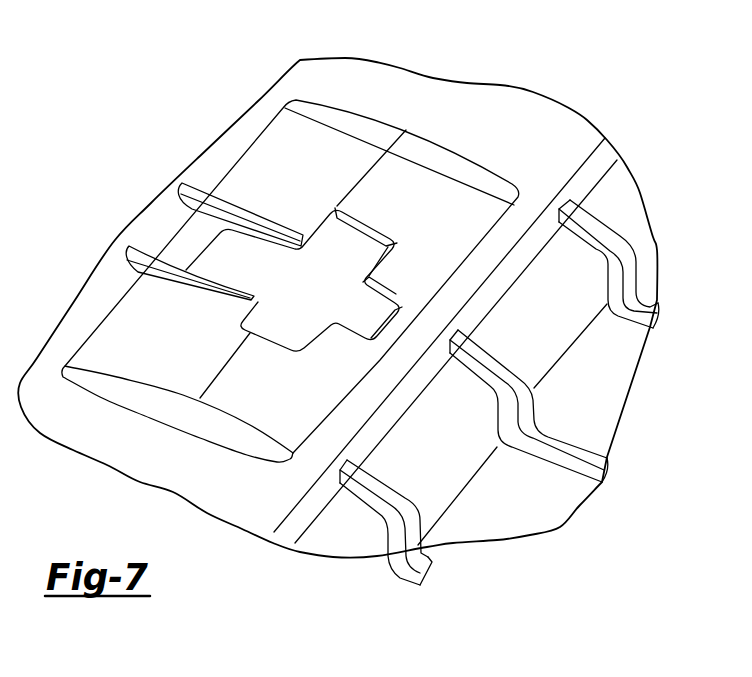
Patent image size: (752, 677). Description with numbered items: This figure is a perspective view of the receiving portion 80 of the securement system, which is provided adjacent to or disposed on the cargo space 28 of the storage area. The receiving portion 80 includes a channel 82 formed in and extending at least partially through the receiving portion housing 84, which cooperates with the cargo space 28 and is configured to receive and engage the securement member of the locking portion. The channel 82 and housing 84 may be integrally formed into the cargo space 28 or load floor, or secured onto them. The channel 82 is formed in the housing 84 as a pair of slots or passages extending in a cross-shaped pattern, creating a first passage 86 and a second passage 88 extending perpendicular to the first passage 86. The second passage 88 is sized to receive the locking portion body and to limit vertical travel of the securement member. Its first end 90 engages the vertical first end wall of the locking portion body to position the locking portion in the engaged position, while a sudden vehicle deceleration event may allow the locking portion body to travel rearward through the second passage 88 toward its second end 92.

The cargo space 28 is at (582, 405).
The receiving portion 80 is at (597, 80).
The channel 82 is at (252, 305).
The receiving portion housing 84 is at (332, 152).
The first passage 86 is at (378, 231).
The second passage 88 is at (278, 240).
The first end 90 is at (198, 253).
The second end 92 is at (394, 323).